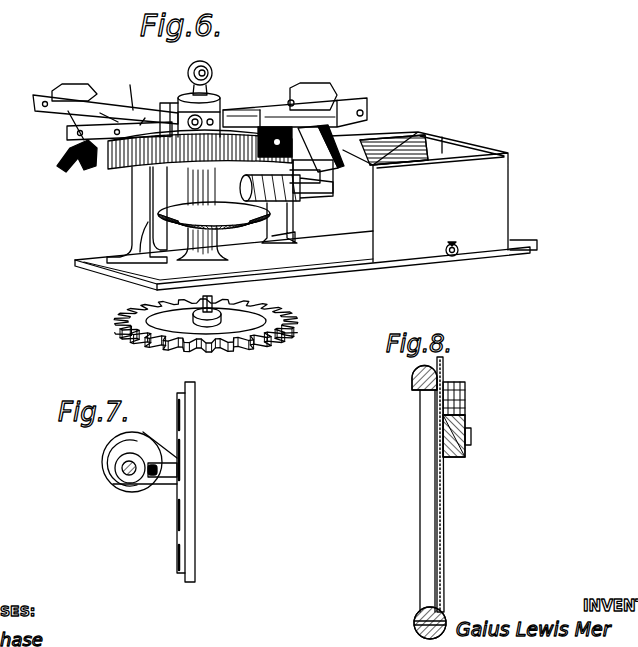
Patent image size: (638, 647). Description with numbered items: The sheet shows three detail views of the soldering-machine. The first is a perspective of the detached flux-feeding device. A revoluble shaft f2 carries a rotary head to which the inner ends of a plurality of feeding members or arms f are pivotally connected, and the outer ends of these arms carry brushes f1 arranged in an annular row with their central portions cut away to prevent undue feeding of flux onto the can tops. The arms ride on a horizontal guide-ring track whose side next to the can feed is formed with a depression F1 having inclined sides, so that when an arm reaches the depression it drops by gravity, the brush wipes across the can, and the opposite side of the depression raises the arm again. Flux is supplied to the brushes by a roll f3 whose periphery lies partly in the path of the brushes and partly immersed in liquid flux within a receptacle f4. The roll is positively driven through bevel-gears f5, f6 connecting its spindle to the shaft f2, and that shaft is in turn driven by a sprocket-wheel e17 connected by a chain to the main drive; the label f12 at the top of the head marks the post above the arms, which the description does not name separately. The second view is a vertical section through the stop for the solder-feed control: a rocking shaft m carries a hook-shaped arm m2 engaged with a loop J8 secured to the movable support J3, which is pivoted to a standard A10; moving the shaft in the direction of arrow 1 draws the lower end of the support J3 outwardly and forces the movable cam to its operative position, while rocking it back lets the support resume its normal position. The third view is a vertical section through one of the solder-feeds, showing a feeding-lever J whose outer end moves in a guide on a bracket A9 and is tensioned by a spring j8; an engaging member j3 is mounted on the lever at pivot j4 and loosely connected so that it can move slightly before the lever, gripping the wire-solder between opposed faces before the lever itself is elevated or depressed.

In FIG. 6, the ball-headed pivot post f12 is at (217, 103).
In FIG. 6, the depression F1 is at (122, 168).
In FIG. 6, the feeding members or arms f is at (133, 110).
In FIG. 6, the brushes f1 is at (70, 86).
In FIG. 6, the bevel-gear f6 is at (246, 180).
In FIG. 6, the bevel-gear f5 is at (230, 243).
In FIG. 6, the receptacle f4 is at (470, 148).
In FIG. 6, the roll f3 is at (388, 133).
In FIG. 6, the revoluble shaft f2 is at (200, 292).
In FIG. 6, the sprocket-wheel e17 is at (284, 310).
In FIG. 7, the standard A10 is at (190, 466).
In FIG. 7, the hook-shaped arm m2 is at (150, 454).
In FIG. 7, the rocking shaft m is at (130, 483).
In FIG. 7, the loop J8 is at (153, 478).
In FIG. 7, the movable support J3 is at (186, 414).
In FIG. 7, the arrow 1 is at (98, 463).
In FIG. 8, the brackets A9 is at (421, 494).
In FIG. 8, the springs j8 is at (444, 490).
In FIG. 8, the feeding-levers J is at (468, 421).
In FIG. 8, the pivots j4 is at (467, 393).
In FIG. 8, the engaging members j3 is at (471, 441).